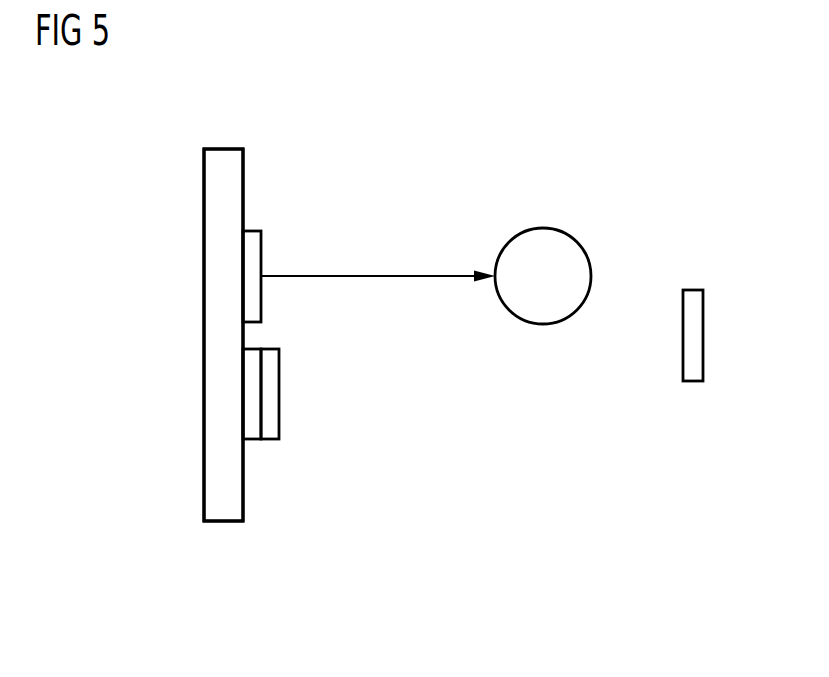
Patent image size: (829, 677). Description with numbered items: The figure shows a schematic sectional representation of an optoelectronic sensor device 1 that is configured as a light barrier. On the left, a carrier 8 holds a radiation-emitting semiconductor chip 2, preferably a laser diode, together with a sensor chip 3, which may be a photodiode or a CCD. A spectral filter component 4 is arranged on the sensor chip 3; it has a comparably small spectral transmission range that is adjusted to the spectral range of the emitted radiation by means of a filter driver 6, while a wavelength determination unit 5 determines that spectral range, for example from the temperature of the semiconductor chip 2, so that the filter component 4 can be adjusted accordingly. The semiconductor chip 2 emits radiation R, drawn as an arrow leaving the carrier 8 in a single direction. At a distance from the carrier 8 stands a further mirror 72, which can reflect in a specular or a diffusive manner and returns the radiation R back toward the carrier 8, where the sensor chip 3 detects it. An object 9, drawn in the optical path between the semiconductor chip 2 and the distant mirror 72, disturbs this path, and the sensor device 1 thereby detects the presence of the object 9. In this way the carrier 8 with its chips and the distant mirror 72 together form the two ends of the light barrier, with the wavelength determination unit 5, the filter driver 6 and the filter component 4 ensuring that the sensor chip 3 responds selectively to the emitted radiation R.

The optoelectronic sensor device 1 is at (692, 402).
The radiation-emitting semiconductor chip 2 is at (261, 308).
The sensor chip 3 is at (256, 440).
The spectral filter component 4 is at (279, 393).
The wavelength determination unit 5 is at (225, 149).
The filter driver 6 is at (223, 335).
The carrier 8 is at (223, 335).
The object 9 is at (541, 228).
The further mirror 72 is at (692, 290).
The radiation R is at (377, 276).